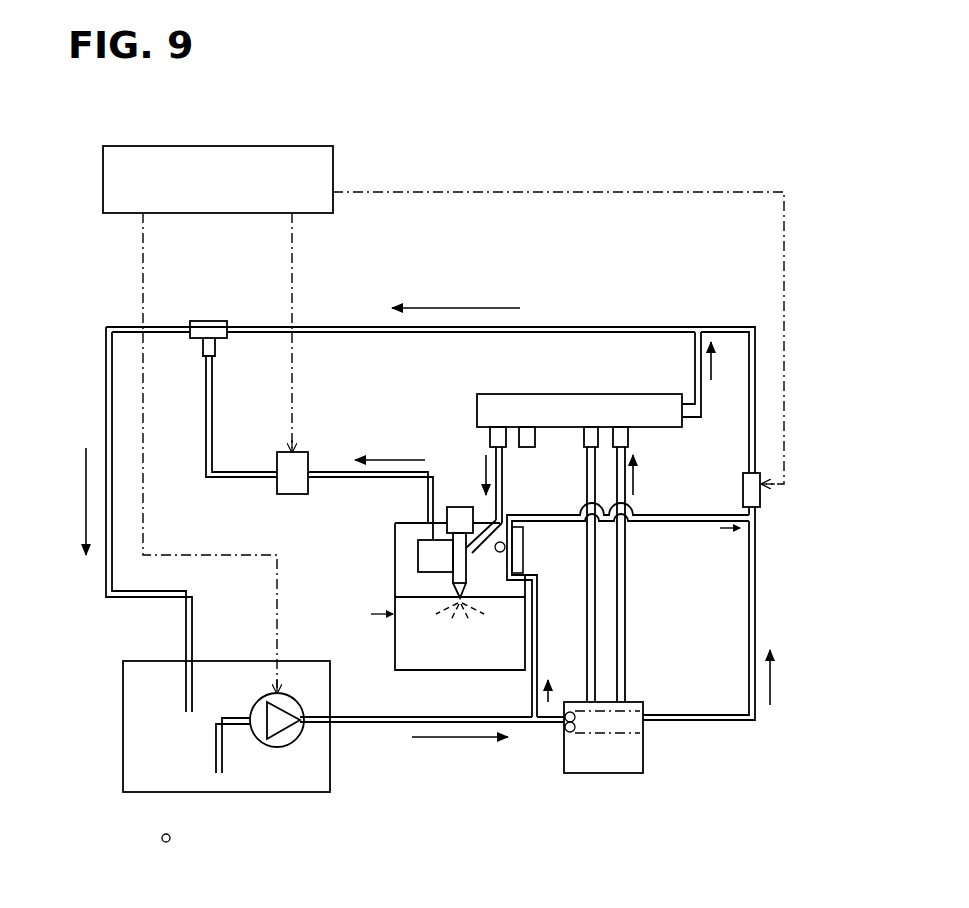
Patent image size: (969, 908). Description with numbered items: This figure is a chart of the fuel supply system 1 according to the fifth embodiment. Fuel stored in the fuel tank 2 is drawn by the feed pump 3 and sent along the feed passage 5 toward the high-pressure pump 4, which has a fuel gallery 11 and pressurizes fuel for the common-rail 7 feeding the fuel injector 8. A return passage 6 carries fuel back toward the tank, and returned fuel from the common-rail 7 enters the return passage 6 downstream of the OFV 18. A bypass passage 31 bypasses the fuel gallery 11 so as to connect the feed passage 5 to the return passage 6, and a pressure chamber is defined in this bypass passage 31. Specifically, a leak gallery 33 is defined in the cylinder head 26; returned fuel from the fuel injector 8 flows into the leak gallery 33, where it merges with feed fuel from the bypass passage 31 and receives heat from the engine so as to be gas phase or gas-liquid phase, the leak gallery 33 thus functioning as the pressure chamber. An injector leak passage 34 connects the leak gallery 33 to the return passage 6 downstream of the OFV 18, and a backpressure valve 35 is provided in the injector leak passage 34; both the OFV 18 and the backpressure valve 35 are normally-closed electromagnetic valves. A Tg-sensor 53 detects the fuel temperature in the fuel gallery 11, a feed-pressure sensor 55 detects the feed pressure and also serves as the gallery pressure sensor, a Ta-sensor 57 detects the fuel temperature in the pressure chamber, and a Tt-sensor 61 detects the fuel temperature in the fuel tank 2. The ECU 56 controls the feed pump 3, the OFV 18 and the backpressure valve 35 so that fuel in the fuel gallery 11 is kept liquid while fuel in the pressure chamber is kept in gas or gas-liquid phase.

The fuel supply system 1 is at (760, 157).
The fuel tank 2 is at (123, 773).
The feed pump 3 is at (292, 743).
The high-pressure pump 4 is at (583, 765).
The feed passage 5 is at (385, 716).
The return passage 6 is at (755, 607).
The common-rail 7 is at (628, 405).
The fuel injector 8 is at (455, 504).
The fuel gallery 11 is at (617, 735).
The OFV 18 is at (758, 498).
The cylinder head 26 is at (418, 563).
The bypass passage 31 is at (670, 525).
The leak gallery 33 is at (425, 545).
The injector leak passage 34 is at (327, 470).
The backpressure valve 35 is at (285, 495).
The Tg-sensor 53 is at (564, 730).
The feed-pressure sensor 55 is at (565, 718).
The ECU 56 is at (345, 122).
The Ta-sensor 57 is at (506, 546).
The Tt-sensor 61 is at (160, 838).